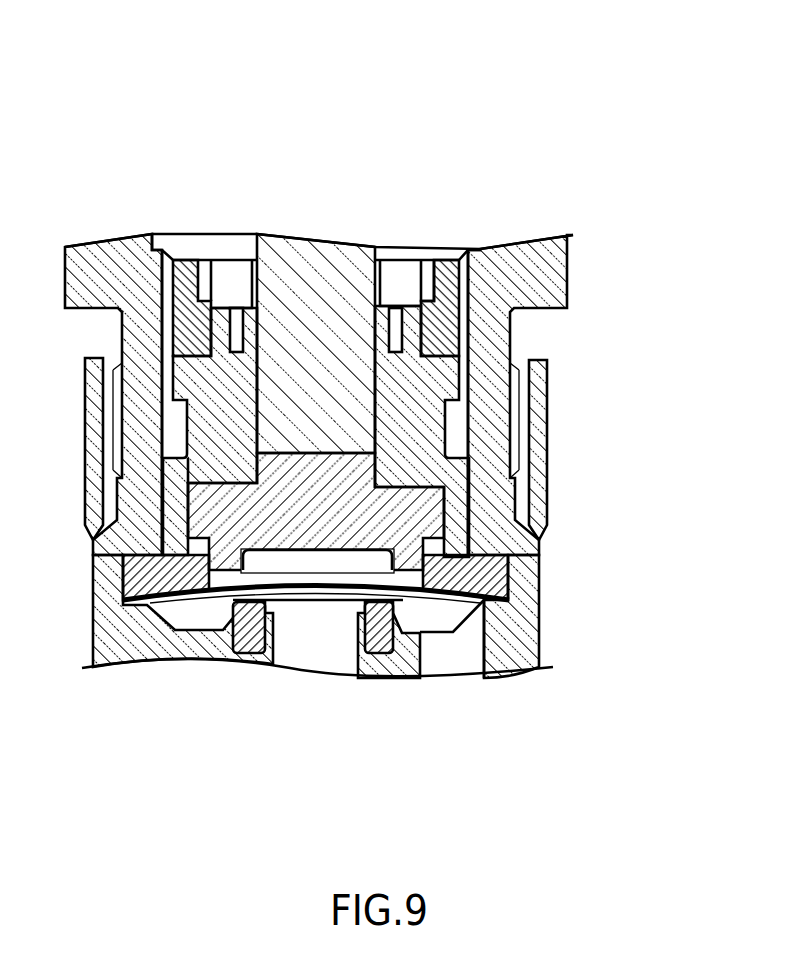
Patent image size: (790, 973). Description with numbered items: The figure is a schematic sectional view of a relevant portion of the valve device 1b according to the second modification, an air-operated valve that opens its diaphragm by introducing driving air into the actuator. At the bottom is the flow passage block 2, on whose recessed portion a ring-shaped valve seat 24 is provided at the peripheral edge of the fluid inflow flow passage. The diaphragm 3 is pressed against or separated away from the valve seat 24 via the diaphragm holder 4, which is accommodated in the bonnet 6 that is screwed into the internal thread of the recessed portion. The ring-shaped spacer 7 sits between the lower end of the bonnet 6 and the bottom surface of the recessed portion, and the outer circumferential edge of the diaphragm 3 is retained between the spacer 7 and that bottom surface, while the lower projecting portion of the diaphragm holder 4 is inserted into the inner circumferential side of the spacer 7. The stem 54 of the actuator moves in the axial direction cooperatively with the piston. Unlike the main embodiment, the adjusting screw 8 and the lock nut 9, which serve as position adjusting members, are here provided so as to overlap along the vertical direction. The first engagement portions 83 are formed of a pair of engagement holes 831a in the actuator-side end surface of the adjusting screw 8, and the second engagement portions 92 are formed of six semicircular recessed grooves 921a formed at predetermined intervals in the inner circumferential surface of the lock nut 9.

The valve device 1b is at (575, 114).
The stem 54 is at (247, 250).
The engagement hole 831a is at (392, 250).
The first engagement portion 83 is at (391, 358).
The semicircular recessed groove 921a is at (430, 250).
The second engagement portion 92 is at (484, 241).
The lock nut 9 is at (419, 241).
The adjusting screw 8 is at (414, 358).
The diaphragm holder 4 is at (400, 513).
The bonnet 6 is at (487, 530).
The spacer 7 is at (483, 570).
The flow passage block 2 is at (530, 650).
The valve seat 24 is at (395, 617).
The diaphragm 3 is at (430, 600).